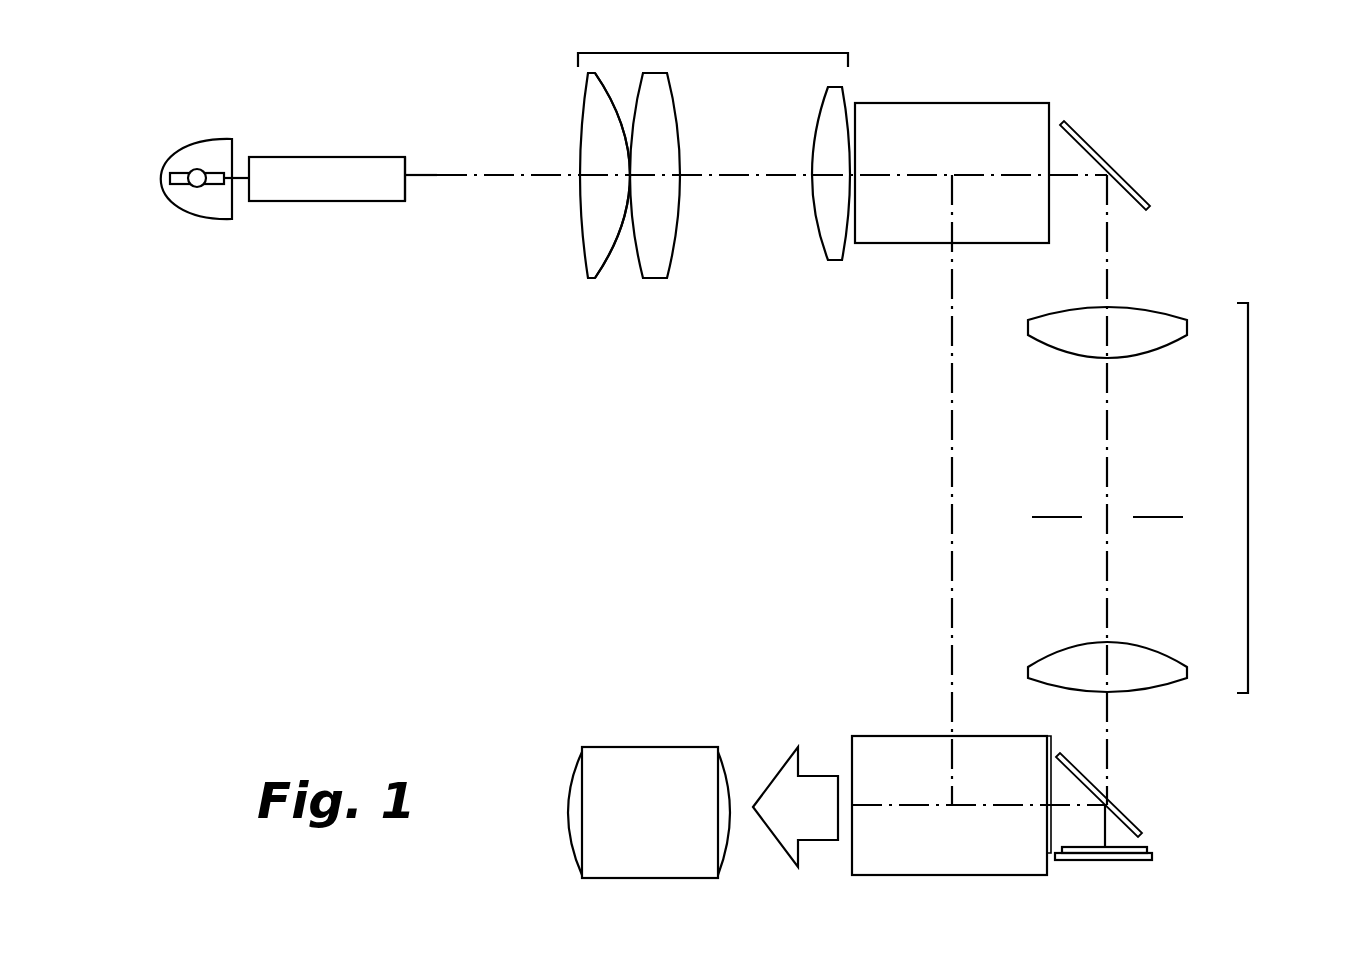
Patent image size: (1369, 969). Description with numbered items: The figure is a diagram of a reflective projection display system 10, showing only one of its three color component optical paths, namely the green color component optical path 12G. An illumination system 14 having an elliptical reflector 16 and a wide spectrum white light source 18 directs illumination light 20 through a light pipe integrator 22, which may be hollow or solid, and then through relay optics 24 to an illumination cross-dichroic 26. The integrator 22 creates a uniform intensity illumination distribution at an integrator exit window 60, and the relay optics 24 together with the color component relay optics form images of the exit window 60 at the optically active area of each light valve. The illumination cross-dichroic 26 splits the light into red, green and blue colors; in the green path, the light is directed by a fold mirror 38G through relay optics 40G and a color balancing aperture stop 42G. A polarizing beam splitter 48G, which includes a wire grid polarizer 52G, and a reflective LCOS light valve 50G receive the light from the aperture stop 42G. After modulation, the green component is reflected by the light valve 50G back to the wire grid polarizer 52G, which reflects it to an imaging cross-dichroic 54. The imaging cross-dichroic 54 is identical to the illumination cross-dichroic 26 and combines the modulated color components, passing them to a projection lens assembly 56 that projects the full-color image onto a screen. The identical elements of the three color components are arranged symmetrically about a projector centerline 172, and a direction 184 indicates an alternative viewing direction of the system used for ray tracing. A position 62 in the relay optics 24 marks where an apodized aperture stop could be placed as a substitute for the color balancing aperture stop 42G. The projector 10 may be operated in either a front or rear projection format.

The reflective projection display system 10 is at (706, 378).
The color component optical path 12G is at (1110, 435).
The illumination system 14 is at (193, 202).
The elliptical reflector 16 is at (207, 140).
The light source 18 is at (182, 170).
The illumination light 20 is at (437, 175).
The light pipe integrator 22 is at (362, 200).
The relay optics 24 is at (700, 53).
The illumination cross-dichroic 26 is at (935, 103).
The fold mirror 38G is at (1083, 140).
The relay optics 40G is at (1178, 498).
The color balancing aperture stop 42G is at (1065, 517).
The polarizing beam splitter 48G is at (1133, 786).
The reflective light valve 50G is at (1130, 860).
The wire grid polarizer 52G is at (1130, 817).
The imaging cross-dichroic 54 is at (907, 736).
The projection lens assembly 56 is at (652, 747).
The integrator exit window 60 is at (408, 158).
The position 62 is at (622, 262).
The projector centerline 172 is at (953, 500).
The direction 184 is at (1197, 243).